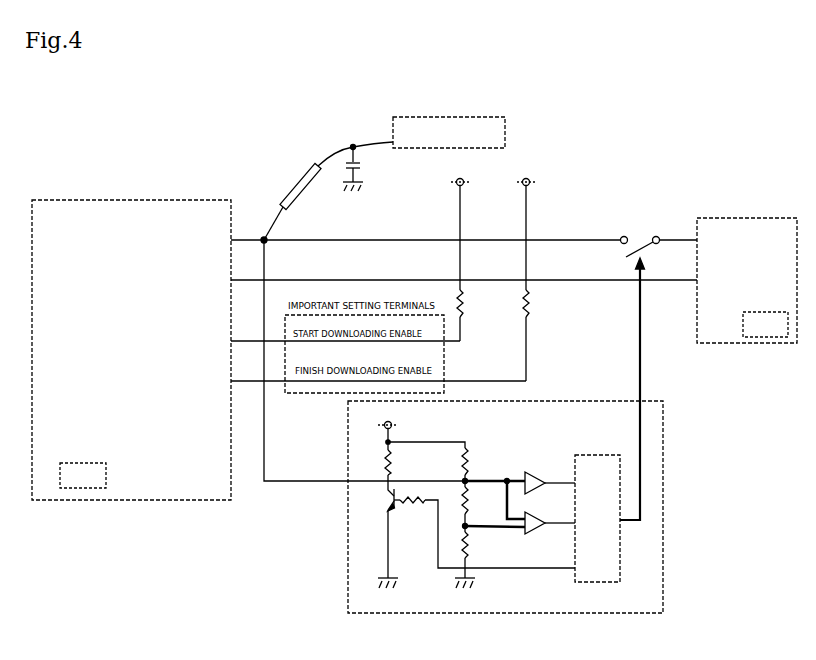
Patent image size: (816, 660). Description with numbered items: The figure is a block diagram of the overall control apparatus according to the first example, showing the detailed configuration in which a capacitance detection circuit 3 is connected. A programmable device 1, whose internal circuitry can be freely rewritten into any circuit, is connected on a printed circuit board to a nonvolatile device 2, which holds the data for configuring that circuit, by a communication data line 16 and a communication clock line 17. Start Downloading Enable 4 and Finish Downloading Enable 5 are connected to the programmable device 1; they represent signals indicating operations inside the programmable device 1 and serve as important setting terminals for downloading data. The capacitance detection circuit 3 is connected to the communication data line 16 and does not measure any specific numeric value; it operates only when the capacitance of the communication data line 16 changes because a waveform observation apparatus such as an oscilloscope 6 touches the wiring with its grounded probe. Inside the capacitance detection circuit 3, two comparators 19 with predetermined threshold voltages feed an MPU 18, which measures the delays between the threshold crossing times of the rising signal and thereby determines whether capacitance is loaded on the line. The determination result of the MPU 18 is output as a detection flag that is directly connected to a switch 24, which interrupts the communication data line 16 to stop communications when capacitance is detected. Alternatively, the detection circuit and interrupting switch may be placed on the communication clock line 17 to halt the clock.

The programmable device 1 is at (143, 200).
The nonvolatile device 2 is at (724, 217).
The capacitance detection circuit 3 is at (489, 426).
The Start Downloading Enable 4 is at (528, 372).
The Finish Downloading Enable 5 is at (463, 326).
The oscilloscope 6 is at (393, 132).
The communication data line 16 is at (578, 238).
The communication clock line 17 is at (579, 283).
The MPU 18 is at (620, 565).
The comparators 19 is at (543, 460).
The switch 24 is at (644, 217).